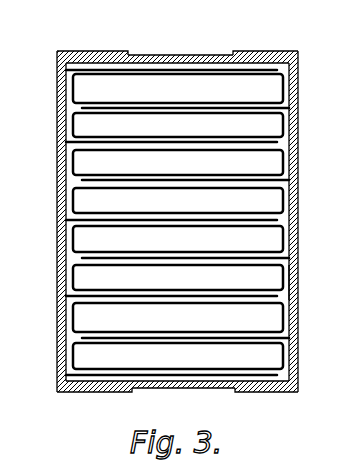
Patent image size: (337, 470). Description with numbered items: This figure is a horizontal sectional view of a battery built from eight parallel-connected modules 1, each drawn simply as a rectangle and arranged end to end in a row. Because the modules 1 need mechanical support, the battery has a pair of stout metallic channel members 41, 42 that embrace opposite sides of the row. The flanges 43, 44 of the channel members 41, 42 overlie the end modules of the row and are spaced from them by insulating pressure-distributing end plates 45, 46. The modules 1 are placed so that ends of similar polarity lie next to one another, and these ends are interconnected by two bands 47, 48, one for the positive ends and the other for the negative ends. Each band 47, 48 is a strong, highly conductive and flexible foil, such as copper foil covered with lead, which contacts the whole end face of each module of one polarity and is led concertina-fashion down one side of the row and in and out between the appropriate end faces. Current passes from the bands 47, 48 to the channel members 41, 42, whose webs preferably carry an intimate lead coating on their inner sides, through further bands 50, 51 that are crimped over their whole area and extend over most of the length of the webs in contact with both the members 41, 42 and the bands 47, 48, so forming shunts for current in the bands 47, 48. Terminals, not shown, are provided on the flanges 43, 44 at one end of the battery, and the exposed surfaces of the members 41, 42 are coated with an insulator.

The module 1 is at (90, 192).
The channel member 41 is at (63, 227).
The channel member 42 is at (300, 350).
The flange 43 is at (103, 53).
The flange 44 is at (276, 53).
The insulating pressure-distributing end plate 45 is at (177, 56).
The insulating pressure-distributing end plate 46 is at (205, 388).
The band 47 is at (83, 143).
The band 48 is at (272, 177).
The band 50 is at (63, 278).
The band 51 is at (296, 283).